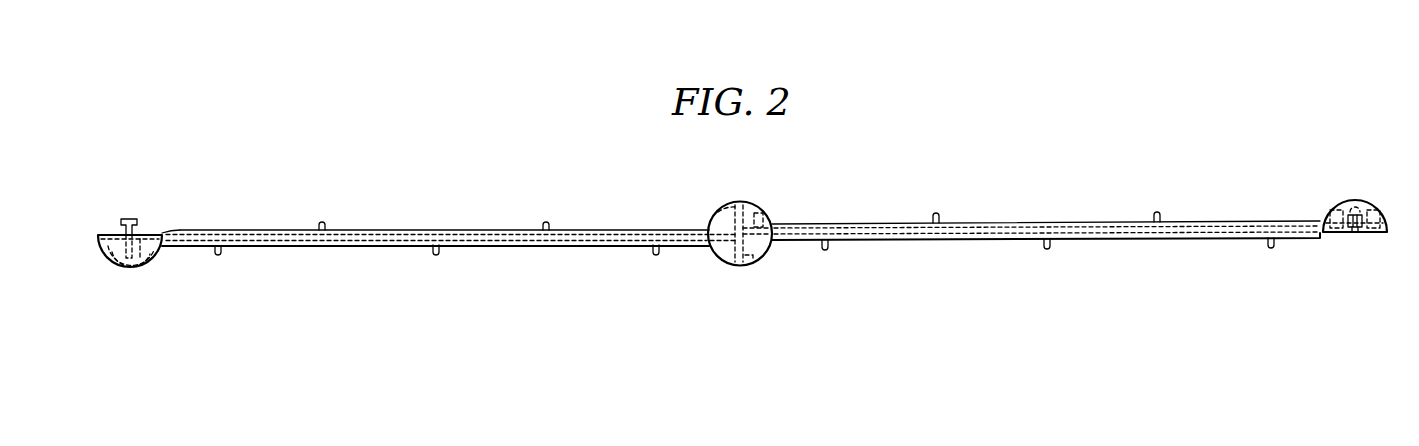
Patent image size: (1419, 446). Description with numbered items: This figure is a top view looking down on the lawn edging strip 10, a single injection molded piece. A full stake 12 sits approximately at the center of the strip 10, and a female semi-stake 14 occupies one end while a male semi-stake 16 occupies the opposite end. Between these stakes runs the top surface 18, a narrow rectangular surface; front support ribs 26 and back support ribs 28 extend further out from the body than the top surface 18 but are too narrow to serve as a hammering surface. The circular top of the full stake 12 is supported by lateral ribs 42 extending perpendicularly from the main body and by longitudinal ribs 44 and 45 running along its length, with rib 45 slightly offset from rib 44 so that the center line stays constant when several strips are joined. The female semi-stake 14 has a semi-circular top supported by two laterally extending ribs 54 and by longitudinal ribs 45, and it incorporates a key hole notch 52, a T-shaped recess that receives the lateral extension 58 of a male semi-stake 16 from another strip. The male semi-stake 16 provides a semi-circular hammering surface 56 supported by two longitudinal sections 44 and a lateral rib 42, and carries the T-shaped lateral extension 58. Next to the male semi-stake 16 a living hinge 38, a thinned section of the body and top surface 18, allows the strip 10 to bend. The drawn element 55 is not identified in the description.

The lawn edging strip 10 is at (452, 159).
The full stake 12 is at (748, 197).
The female semi-stake 14 is at (1357, 242).
The male semi-stake 16 is at (125, 203).
The top surface 18 is at (385, 229).
The front support ribs 26 is at (218, 257).
The back support ribs 28 is at (322, 223).
The living hinge 38 is at (169, 229).
The lateral ribs 42 is at (118, 268).
The longitudinal rib 44 is at (148, 247).
The longitudinal rib 45 is at (760, 217).
The key hole notch 52 is at (1347, 230).
The laterally extending ribs 54 is at (1340, 205).
The detent 55 is at (1357, 204).
The hammering surface 56 is at (148, 269).
The lateral extension 58 is at (137, 220).